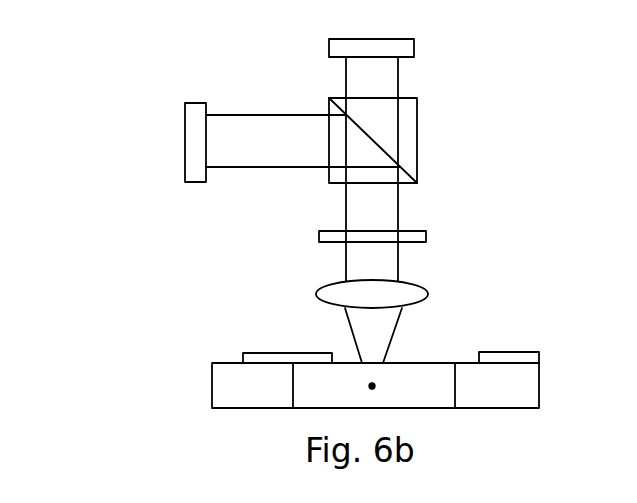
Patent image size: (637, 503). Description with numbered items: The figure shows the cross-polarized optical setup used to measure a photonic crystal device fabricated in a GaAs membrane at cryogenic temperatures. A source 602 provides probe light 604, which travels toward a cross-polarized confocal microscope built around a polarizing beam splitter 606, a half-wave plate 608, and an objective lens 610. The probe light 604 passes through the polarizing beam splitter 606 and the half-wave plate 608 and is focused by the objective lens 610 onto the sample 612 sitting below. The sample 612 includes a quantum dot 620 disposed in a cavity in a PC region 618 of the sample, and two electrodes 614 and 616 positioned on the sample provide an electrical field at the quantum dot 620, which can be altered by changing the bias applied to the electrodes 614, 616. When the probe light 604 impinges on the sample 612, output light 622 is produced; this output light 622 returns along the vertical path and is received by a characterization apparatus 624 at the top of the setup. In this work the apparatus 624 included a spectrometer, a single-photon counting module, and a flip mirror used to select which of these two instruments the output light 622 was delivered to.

The source 602 is at (192, 130).
The probe light 604 is at (273, 115).
The polarizing beam splitter 606 is at (410, 131).
The half-wave plate 608 is at (417, 237).
The objective lens 610 is at (320, 288).
The sample 612 is at (193, 368).
The electrode 614 is at (275, 359).
The electrode 616 is at (512, 355).
The PC region 618 is at (433, 393).
The quantum dot 620 is at (372, 386).
The output light 622 is at (398, 75).
The characterization apparatus 624 is at (397, 47).